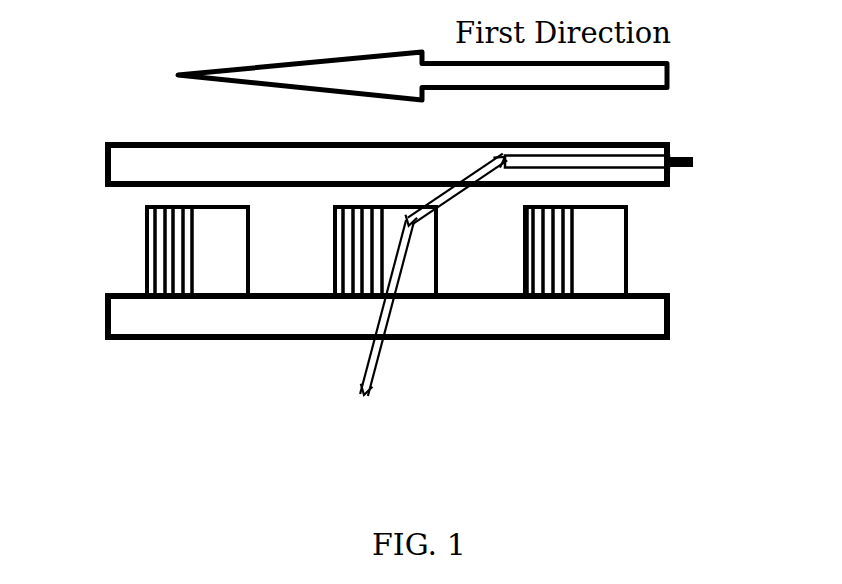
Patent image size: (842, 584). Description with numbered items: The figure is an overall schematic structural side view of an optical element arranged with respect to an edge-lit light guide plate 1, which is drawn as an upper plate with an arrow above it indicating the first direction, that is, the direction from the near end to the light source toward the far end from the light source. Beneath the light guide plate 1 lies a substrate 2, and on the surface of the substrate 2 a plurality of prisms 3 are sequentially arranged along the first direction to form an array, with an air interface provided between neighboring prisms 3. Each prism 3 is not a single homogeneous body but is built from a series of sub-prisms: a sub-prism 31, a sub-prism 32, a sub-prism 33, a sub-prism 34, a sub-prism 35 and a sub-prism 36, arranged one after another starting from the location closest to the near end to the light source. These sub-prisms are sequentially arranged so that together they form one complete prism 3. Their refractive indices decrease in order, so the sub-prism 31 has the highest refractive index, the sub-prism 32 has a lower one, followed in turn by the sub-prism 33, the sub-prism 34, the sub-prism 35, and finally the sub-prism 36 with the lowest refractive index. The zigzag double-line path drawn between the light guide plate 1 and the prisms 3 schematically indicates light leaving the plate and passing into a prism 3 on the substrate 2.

The edge-lit light guide plate 1 is at (163, 162).
The substrate 2 is at (150, 320).
The prism 3 is at (465, 354).
The sub-prism 31 is at (597, 300).
The sub-prism 32 is at (568, 300).
The sub-prism 33 is at (560, 300).
The sub-prism 34 is at (547, 300).
The sub-prism 35 is at (537, 300).
The sub-prism 36 is at (527, 300).